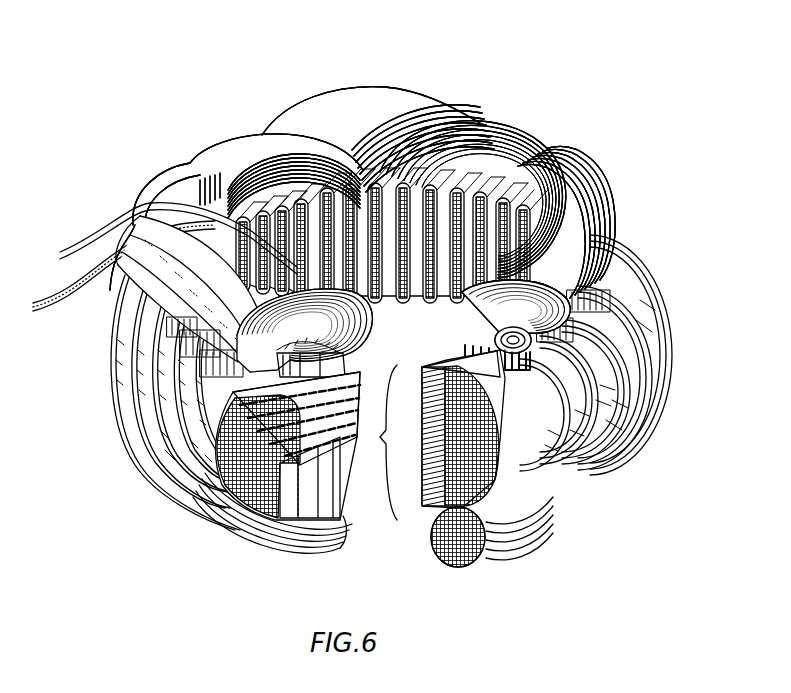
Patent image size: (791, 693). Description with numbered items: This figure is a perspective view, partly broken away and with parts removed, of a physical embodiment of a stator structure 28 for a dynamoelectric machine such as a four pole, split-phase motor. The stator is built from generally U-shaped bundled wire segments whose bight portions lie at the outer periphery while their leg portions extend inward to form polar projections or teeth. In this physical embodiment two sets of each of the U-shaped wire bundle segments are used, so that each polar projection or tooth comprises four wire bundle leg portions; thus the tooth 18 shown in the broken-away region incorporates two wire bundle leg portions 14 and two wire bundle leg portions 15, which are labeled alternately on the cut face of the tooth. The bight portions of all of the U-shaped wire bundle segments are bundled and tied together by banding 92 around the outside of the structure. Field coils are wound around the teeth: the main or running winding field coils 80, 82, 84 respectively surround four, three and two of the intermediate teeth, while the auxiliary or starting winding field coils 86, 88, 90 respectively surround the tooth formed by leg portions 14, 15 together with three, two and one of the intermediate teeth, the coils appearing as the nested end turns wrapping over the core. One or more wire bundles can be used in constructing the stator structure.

The main winding field coil 80 is at (372, 112).
The main winding field coil 82 is at (372, 112).
The main winding field coil 84 is at (372, 112).
The auxiliary winding field coil 86 is at (490, 157).
The auxiliary winding field coil 88 is at (490, 157).
The auxiliary winding field coil 90 is at (490, 157).
The banding 92 is at (670, 300).
The leg portion 14 is at (422, 445).
The leg portion 15 is at (422, 480).
The polar projection or tooth 18 is at (356, 462).
The stator structure 28 is at (616, 101).